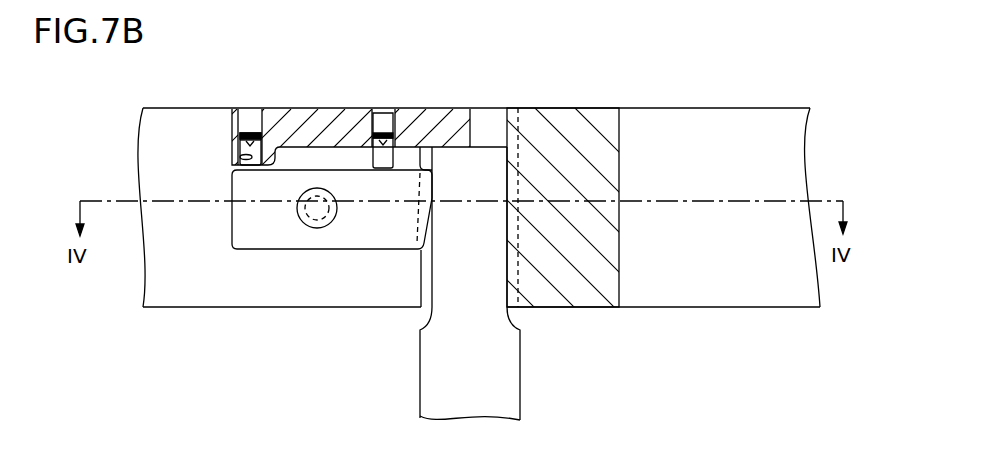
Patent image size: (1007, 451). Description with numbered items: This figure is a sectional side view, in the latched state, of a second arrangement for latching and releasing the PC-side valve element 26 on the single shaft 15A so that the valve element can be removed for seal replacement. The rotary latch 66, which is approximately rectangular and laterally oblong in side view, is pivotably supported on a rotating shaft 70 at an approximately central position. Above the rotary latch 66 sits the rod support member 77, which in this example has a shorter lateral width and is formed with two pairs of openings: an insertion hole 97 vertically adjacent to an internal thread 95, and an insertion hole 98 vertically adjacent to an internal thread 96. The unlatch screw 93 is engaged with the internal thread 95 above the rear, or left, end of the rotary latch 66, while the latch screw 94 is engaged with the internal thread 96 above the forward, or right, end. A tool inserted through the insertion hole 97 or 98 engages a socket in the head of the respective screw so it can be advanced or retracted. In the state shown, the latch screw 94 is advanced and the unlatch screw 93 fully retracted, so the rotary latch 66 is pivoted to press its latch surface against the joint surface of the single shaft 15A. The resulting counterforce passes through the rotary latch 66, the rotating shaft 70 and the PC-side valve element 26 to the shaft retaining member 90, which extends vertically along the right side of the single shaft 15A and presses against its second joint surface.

The PC-side valve element 26 is at (697, 127).
The rod support member 77 is at (323, 127).
The unlatch screw 93 is at (252, 150).
The insertion hole 97 is at (258, 120).
The internal thread 95 is at (243, 157).
The insertion hole 98 is at (388, 157).
The internal thread 96 is at (375, 128).
The latch screw 94 is at (400, 150).
The rotary latch 66 is at (273, 250).
The rotating shaft 70 is at (334, 226).
The shaft retaining member 90 is at (590, 297).
The single shaft 15A is at (492, 390).